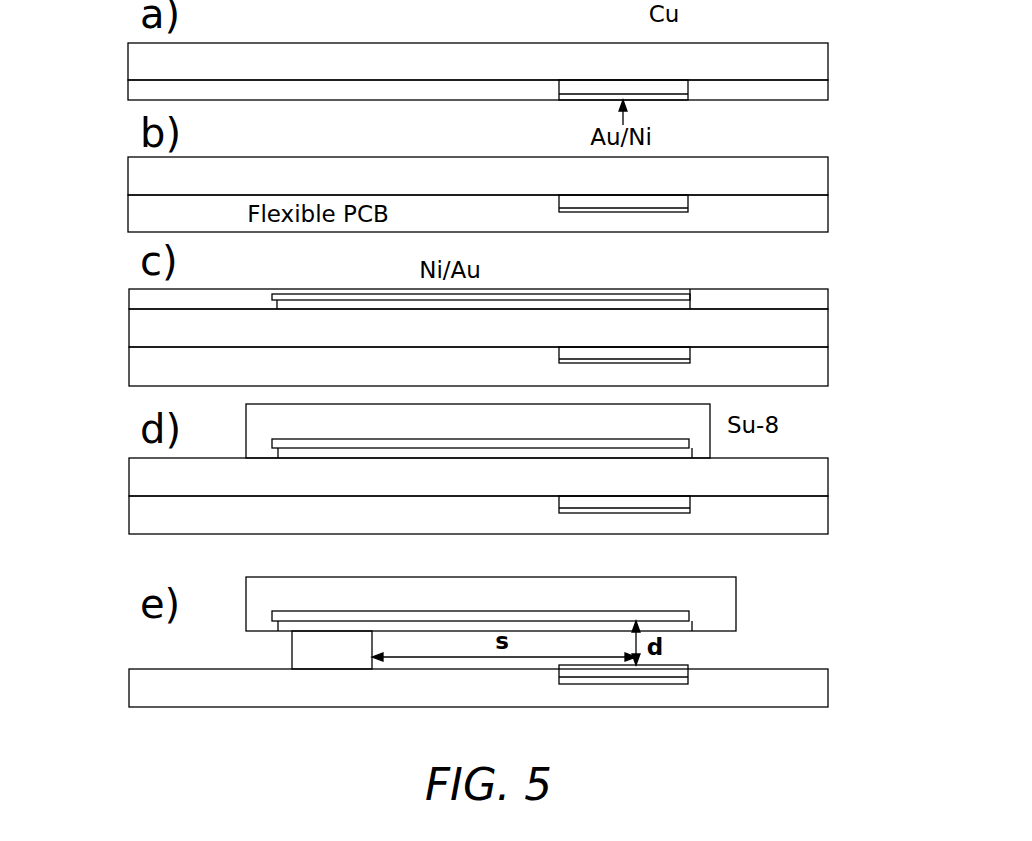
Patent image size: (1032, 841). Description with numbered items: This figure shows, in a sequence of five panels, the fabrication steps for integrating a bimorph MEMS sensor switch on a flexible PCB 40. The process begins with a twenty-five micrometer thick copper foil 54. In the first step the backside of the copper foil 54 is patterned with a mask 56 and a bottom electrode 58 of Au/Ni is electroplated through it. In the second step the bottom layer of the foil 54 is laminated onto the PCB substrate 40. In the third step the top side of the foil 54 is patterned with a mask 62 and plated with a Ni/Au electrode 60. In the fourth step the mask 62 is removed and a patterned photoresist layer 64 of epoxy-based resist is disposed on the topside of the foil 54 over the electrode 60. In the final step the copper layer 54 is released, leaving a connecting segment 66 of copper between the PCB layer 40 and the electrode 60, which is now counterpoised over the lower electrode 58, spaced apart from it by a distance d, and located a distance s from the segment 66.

The flexible PCB 40 is at (128, 218).
The copper foil 54 is at (128, 44).
The mask 56 is at (128, 85).
The bottom electrode 58 is at (675, 96).
The Ni/Au electrode 60 is at (648, 298).
The mask 62 is at (803, 295).
The SU-8 photoresist layer 64 is at (712, 441).
The connecting segment 66 is at (331, 658).